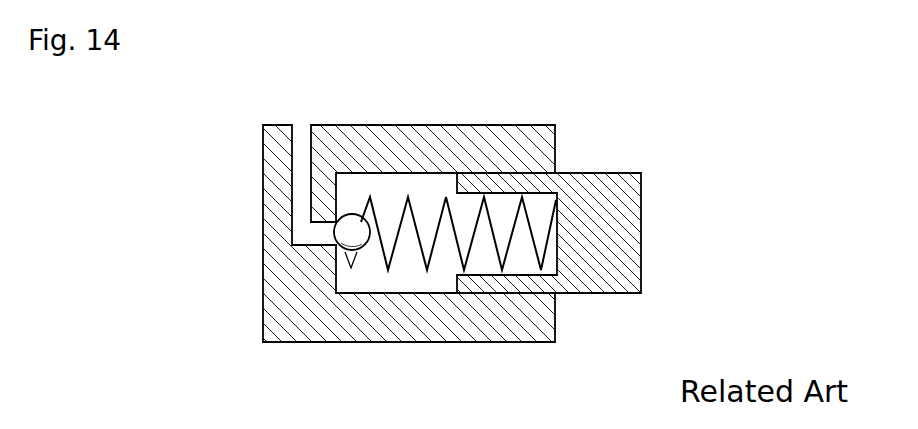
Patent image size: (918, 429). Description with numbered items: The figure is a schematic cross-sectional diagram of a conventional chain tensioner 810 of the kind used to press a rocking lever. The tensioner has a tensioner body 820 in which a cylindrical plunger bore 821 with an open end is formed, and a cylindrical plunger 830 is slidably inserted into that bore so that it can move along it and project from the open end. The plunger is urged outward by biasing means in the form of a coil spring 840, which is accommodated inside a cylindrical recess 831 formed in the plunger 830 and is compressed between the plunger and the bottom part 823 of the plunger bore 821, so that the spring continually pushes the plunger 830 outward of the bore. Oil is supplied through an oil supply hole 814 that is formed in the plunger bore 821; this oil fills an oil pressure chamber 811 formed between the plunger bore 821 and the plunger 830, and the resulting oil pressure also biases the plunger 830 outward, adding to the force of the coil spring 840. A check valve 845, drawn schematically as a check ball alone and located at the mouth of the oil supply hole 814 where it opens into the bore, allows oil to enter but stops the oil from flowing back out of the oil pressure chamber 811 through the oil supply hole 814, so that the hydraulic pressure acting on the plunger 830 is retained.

The chain tensioner 810 is at (574, 98).
The oil pressure chamber 811 is at (413, 265).
The oil supply hole 814 is at (301, 125).
The tensioner body 820 is at (361, 322).
The plunger bore 821 is at (436, 174).
The bottom part of the plunger bore 823 is at (347, 280).
The plunger 830 is at (640, 255).
The cylindrical recess 831 is at (486, 268).
The coil spring 840 is at (510, 243).
The check valve 845 is at (334, 231).